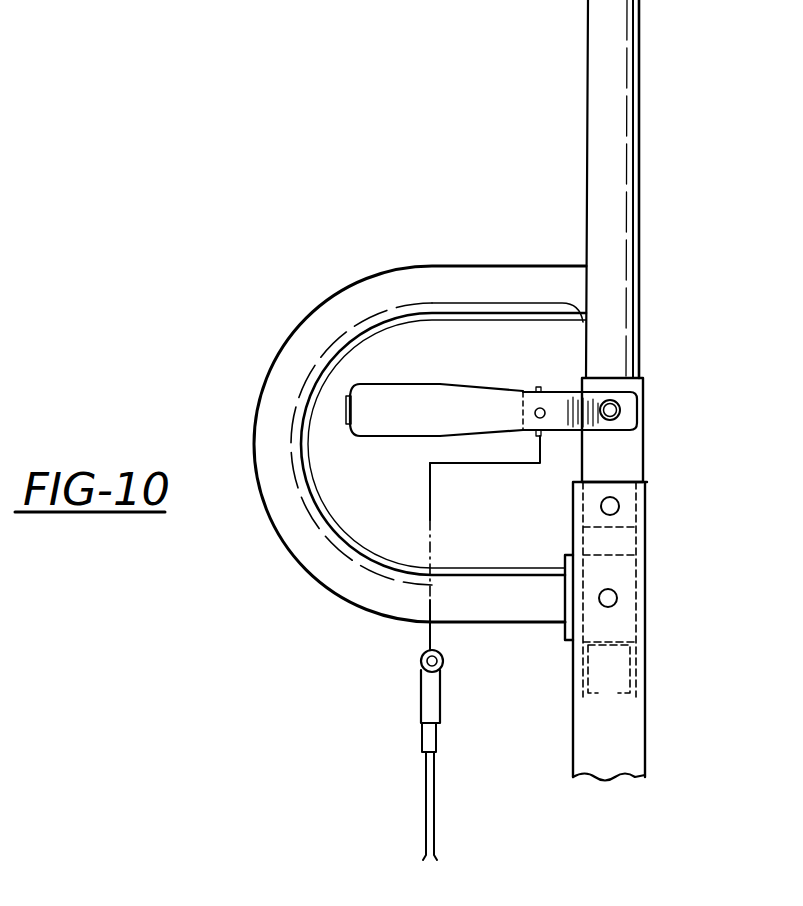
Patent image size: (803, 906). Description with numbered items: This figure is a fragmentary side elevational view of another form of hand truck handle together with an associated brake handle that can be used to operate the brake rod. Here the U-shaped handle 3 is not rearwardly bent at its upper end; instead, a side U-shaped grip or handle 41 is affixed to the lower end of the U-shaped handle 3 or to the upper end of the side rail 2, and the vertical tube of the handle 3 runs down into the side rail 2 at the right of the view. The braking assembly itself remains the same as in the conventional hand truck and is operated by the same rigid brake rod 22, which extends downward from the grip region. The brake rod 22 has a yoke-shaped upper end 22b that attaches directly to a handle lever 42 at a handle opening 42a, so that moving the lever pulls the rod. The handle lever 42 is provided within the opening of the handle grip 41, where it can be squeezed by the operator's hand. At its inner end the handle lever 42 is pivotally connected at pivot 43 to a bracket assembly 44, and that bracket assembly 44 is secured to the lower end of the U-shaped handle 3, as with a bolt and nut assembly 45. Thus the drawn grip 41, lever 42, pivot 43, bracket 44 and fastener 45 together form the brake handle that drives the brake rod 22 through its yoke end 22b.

The side rail 2 is at (638, 747).
The U-shaped handle 3 is at (626, 110).
The brake rod 22 is at (424, 775).
The yoke-shaped upper end 22b is at (423, 681).
The side U-shaped grip 41 is at (465, 278).
The handle lever 42 is at (397, 392).
The handle opening 42a is at (545, 416).
The pivotal connection 43 is at (620, 408).
The bracket assembly 44 is at (643, 456).
The bolt and nut assembly 45 is at (620, 508).